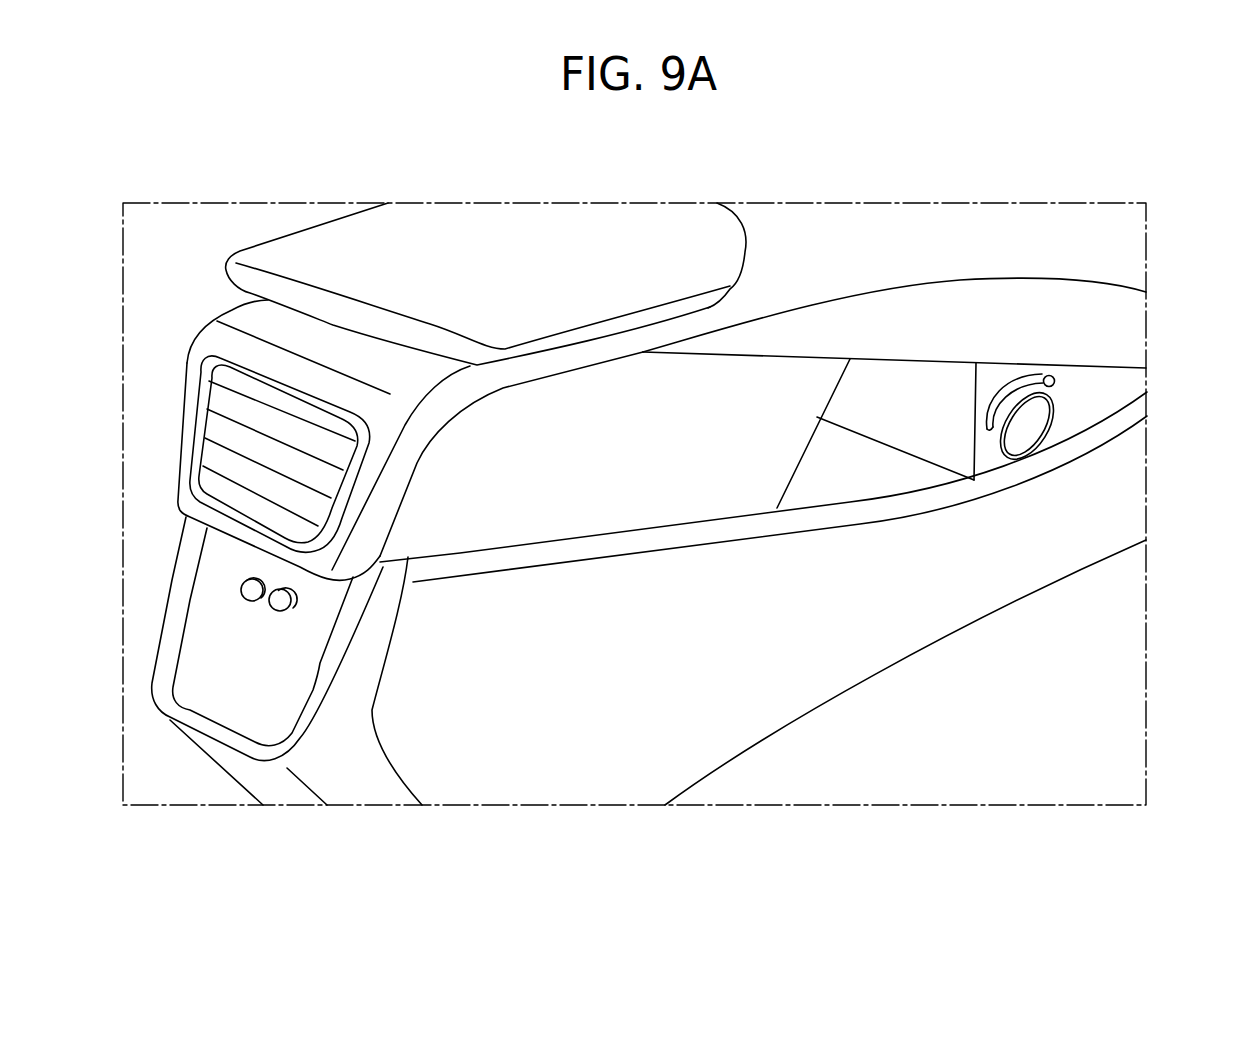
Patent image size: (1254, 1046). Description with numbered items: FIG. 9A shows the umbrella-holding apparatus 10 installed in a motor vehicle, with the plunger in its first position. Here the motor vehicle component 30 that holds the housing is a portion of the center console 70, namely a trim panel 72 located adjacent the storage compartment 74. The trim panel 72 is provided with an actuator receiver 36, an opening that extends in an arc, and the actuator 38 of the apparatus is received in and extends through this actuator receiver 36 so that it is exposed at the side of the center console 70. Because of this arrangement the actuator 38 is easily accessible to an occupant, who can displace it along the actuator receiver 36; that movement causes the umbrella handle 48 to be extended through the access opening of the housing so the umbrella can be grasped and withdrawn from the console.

The center console 10 is at (470, 175).
The motor vehicle component 30 is at (573, 742).
The actuator receiver 36 is at (1003, 387).
The actuator 38 is at (1056, 378).
The umbrella handle 48 is at (1025, 428).
The center console 70 is at (787, 670).
The trim panel 72 is at (1077, 397).
The storage compartment 74 is at (915, 398).